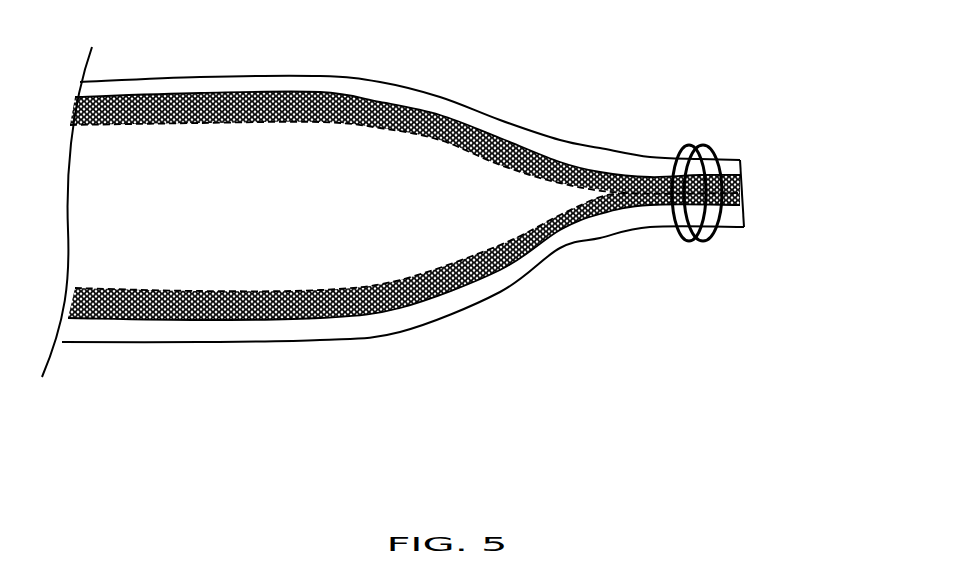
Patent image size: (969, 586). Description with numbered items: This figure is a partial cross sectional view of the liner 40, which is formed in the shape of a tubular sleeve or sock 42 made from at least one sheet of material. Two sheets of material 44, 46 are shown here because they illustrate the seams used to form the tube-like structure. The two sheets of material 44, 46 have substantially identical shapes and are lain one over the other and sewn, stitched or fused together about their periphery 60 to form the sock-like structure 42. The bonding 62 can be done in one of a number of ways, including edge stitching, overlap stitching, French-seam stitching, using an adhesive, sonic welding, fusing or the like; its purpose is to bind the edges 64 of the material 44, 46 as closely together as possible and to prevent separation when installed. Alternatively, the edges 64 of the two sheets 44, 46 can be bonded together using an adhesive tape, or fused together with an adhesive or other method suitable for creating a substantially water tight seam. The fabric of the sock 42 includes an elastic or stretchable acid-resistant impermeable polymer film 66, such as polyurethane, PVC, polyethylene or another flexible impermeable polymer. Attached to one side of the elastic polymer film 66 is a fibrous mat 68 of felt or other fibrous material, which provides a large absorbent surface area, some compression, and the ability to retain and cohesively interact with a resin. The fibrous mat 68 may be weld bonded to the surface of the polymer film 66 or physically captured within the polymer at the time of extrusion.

The liner 40 is at (93, 412).
The tubular sleeve or sock 42 is at (175, 370).
The sheet of material 44 is at (343, 77).
The sheet of material 46 is at (380, 333).
The periphery 60 is at (763, 159).
The bonding 62 is at (707, 143).
The edges 64 is at (770, 215).
The elastic polymer film 66 is at (508, 130).
The fibrous mat 68 is at (405, 135).